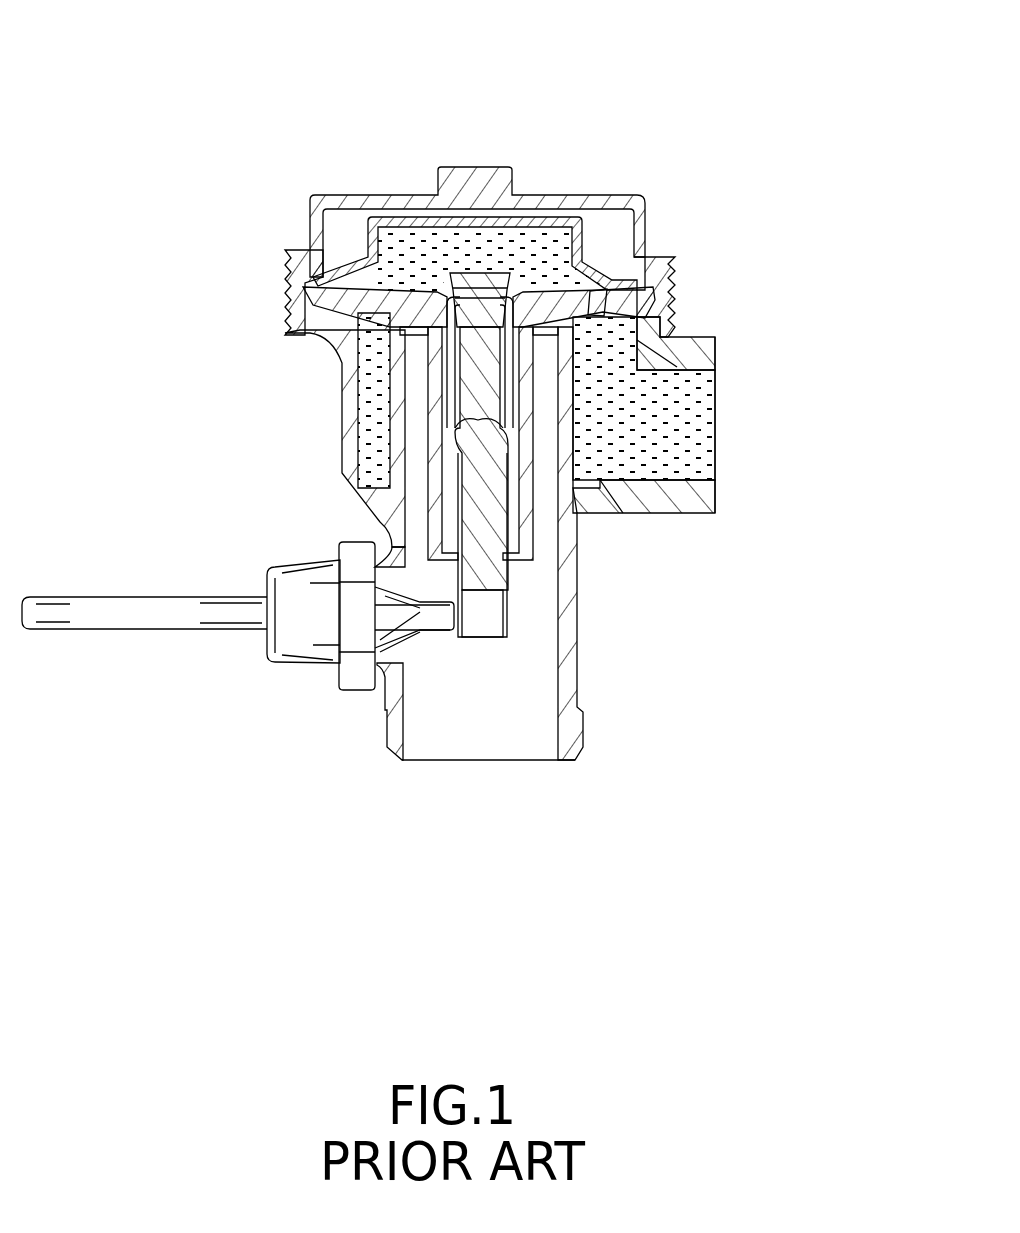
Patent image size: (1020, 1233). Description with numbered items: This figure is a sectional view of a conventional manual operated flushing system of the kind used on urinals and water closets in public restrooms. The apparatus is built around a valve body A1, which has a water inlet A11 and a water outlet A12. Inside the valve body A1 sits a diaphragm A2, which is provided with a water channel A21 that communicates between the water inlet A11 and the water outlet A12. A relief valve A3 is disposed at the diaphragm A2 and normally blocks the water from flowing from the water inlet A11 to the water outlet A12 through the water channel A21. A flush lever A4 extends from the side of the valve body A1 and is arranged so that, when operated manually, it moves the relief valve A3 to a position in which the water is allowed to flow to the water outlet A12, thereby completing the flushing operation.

The valve body A1 is at (570, 643).
The water inlet A11 is at (677, 421).
The water outlet A12 is at (473, 716).
The diaphragm A2 is at (623, 299).
The water channel A21 is at (458, 400).
The relief valve A3 is at (493, 287).
The flush lever A4 is at (140, 617).